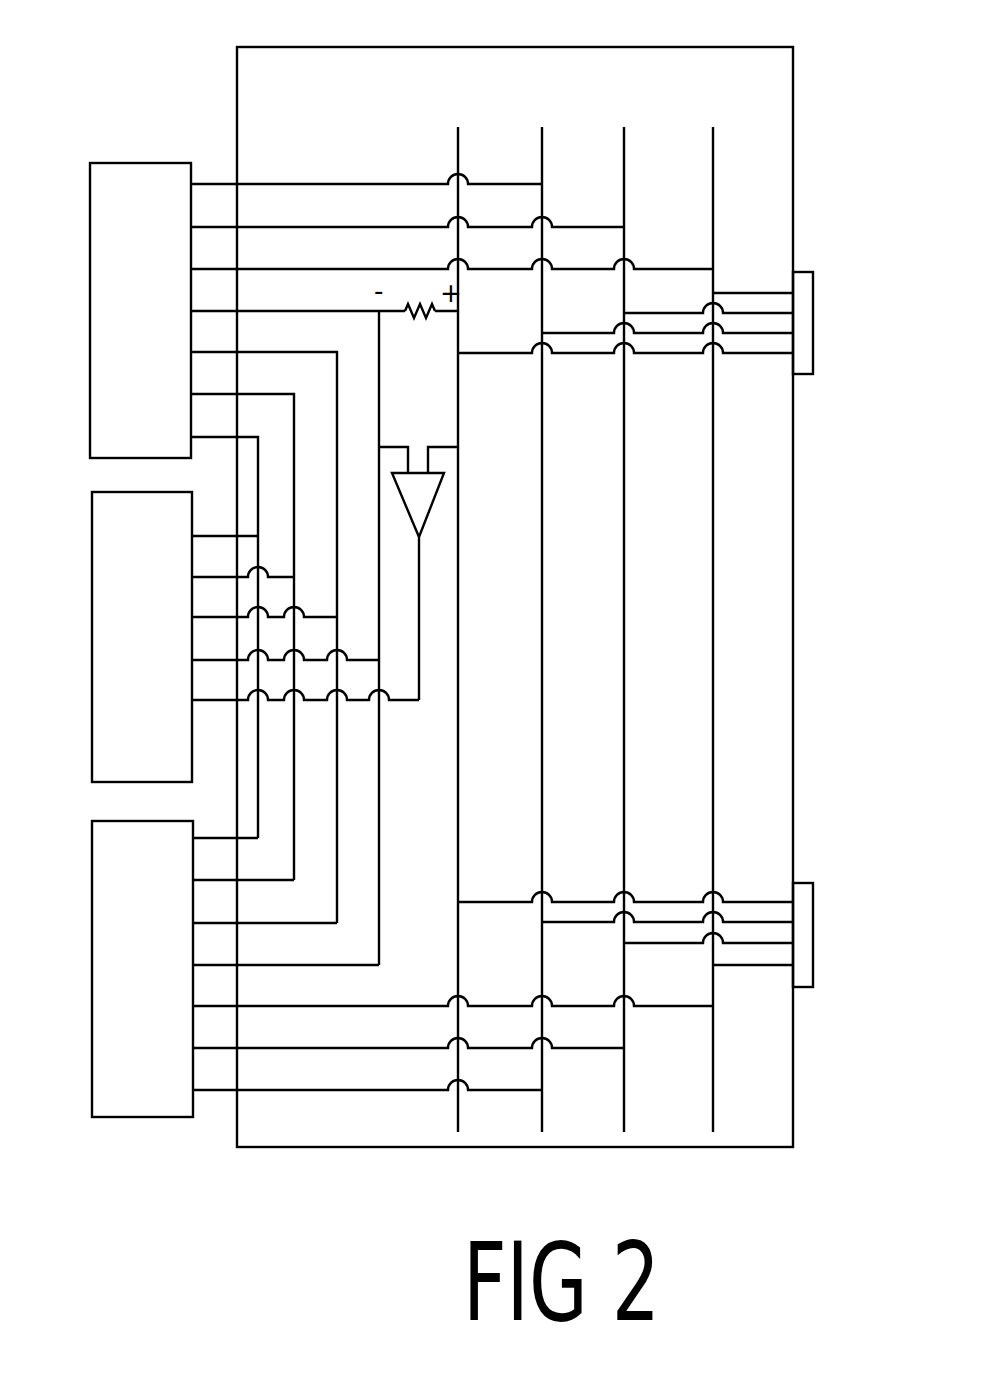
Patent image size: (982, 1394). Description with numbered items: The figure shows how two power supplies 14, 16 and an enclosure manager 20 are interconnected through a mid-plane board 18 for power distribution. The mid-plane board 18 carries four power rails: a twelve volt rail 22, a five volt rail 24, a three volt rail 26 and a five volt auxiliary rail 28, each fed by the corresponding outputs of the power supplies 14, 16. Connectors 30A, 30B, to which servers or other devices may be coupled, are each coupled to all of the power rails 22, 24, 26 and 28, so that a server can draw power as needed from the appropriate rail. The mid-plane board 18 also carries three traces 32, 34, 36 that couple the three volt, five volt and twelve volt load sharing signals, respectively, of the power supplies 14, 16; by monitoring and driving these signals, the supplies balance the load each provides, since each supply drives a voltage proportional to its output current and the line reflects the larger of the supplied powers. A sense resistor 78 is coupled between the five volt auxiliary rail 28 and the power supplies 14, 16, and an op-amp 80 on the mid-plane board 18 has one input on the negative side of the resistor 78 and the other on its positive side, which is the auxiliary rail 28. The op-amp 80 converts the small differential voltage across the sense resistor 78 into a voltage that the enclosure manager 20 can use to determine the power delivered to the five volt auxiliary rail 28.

The power supply 14 is at (90, 295).
The power supply 16 is at (92, 952).
The mid-plane board 18 is at (390, 47).
The enclosure manager 20 is at (162, 650).
The 12 volt rail 22 is at (713, 146).
The 5 volt rail 24 is at (624, 178).
The 3 volt rail 26 is at (542, 145).
The 5 volt auxiliary rail 28 is at (458, 146).
The connector 30A is at (798, 272).
The connector 30B is at (800, 883).
The trace 32 is at (337, 380).
The trace 34 is at (294, 412).
The trace 36 is at (258, 456).
The sense resistor 78 is at (417, 322).
The op-amp 80 is at (420, 492).